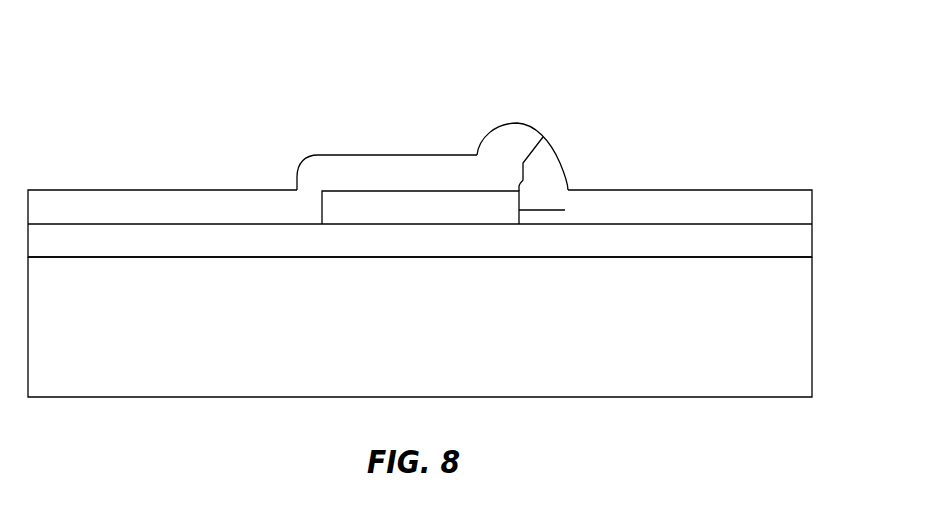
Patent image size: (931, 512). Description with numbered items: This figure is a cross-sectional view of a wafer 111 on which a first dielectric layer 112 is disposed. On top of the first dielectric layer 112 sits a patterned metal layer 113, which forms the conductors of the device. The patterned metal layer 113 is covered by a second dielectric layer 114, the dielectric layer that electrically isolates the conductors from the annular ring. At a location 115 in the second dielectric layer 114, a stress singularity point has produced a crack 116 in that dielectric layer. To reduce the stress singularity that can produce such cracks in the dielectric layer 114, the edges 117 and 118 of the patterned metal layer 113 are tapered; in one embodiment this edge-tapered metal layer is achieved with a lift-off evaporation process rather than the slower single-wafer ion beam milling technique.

The wafer 111 is at (797, 323).
The first dielectric layer 112 is at (793, 239).
The patterned metal layer 113 is at (385, 210).
The second dielectric layer 114 is at (788, 207).
The location of stress singularity point 115 is at (555, 102).
The crack 116 is at (523, 164).
The edge of patterned metal layer 117 is at (320, 208).
The edge of patterned metal layer 118 is at (565, 210).